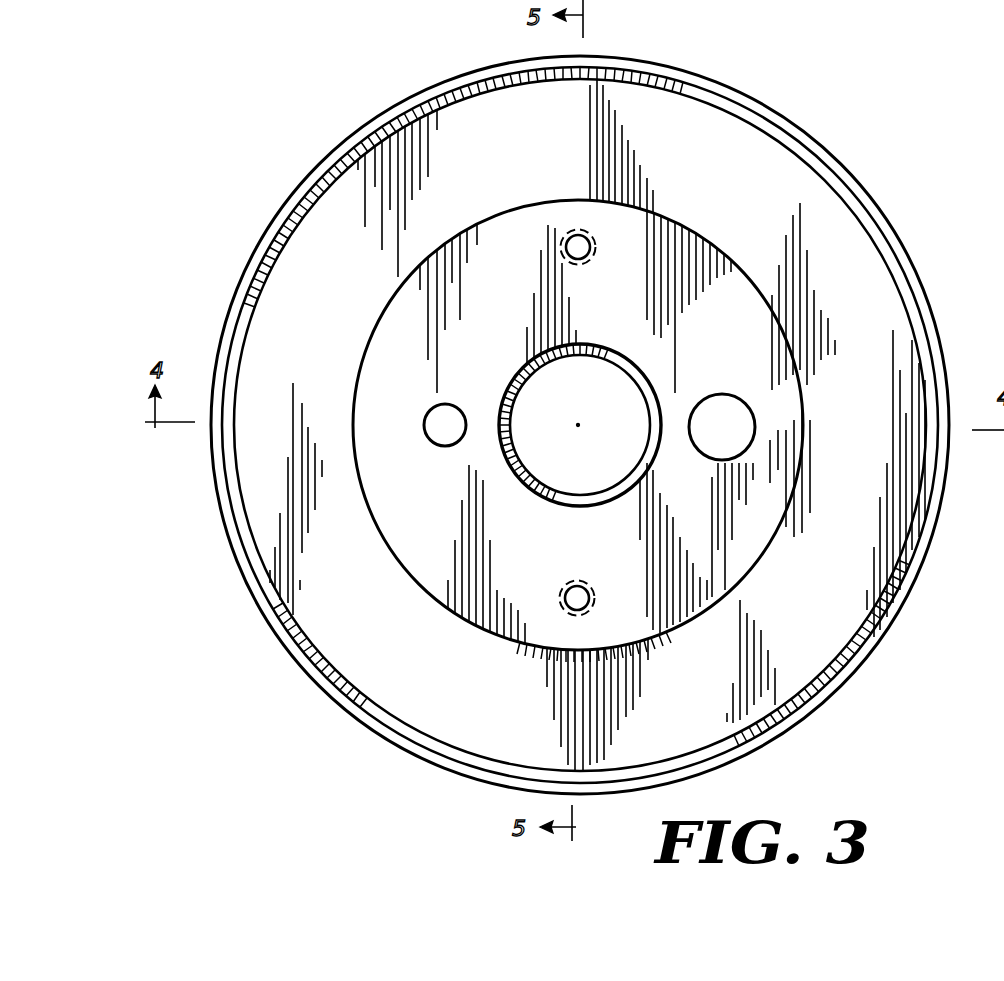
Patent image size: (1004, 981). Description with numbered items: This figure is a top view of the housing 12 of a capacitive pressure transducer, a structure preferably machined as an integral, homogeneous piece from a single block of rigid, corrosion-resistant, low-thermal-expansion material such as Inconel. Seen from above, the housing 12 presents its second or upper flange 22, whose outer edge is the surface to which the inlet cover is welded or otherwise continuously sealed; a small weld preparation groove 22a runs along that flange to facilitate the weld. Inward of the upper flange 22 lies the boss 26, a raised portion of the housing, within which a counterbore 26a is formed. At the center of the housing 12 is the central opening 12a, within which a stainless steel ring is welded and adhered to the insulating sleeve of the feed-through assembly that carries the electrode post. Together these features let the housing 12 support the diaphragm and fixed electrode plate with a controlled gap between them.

The housing structure 12 is at (846, 142).
The central opening 12a is at (563, 403).
The second or upper flange 22 is at (822, 200).
The weld preparation groove 22a is at (888, 250).
The boss 26 is at (687, 230).
The counterbore 26a is at (641, 377).